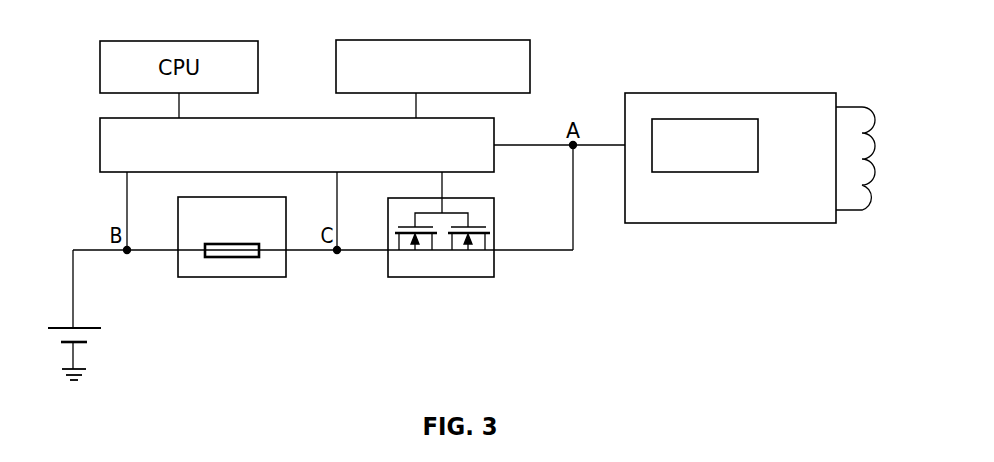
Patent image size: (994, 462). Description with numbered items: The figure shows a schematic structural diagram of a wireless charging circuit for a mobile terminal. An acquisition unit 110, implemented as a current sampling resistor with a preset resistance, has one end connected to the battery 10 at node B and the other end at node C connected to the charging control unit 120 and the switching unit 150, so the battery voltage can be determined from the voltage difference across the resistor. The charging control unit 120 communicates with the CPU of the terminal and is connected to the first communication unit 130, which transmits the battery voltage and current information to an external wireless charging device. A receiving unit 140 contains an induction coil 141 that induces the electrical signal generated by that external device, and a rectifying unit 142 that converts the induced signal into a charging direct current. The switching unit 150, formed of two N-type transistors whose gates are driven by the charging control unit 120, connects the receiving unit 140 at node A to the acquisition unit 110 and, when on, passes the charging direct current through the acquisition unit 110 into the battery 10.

The battery 10 is at (88, 328).
The acquisition unit 110 is at (232, 277).
The charging control unit 120 is at (272, 118).
The first communication unit 130 is at (443, 40).
The receiving unit 140 is at (766, 154).
The induction coil 141 is at (848, 212).
The rectifying unit 142 is at (758, 137).
The switching unit 150 is at (440, 277).